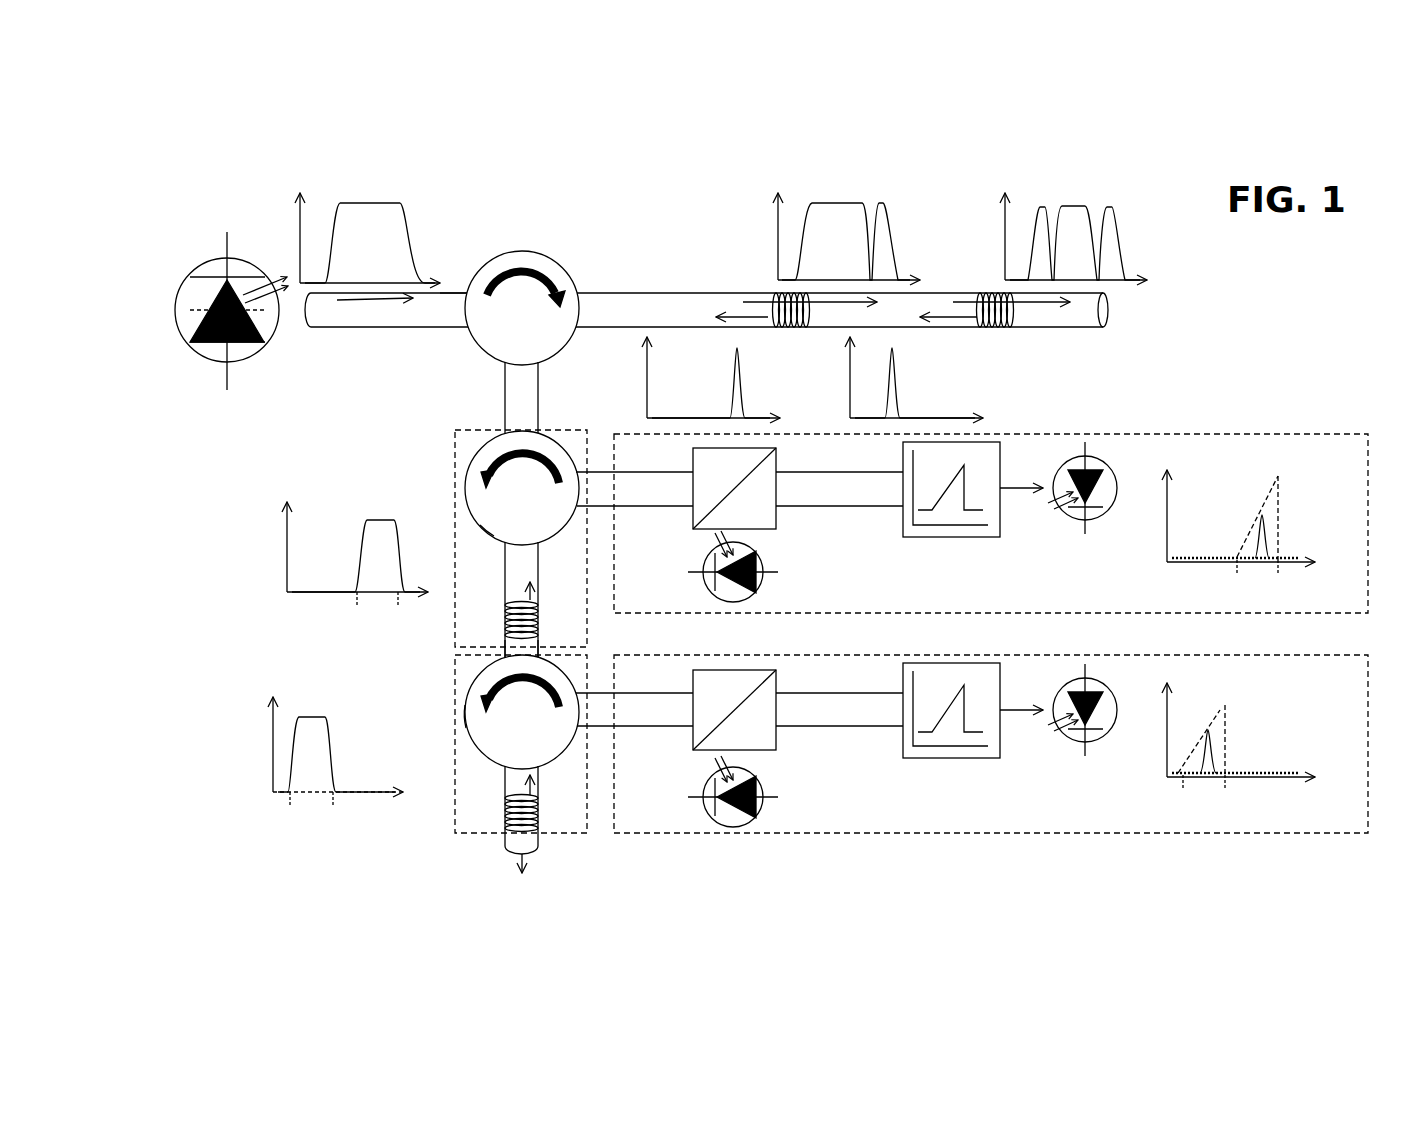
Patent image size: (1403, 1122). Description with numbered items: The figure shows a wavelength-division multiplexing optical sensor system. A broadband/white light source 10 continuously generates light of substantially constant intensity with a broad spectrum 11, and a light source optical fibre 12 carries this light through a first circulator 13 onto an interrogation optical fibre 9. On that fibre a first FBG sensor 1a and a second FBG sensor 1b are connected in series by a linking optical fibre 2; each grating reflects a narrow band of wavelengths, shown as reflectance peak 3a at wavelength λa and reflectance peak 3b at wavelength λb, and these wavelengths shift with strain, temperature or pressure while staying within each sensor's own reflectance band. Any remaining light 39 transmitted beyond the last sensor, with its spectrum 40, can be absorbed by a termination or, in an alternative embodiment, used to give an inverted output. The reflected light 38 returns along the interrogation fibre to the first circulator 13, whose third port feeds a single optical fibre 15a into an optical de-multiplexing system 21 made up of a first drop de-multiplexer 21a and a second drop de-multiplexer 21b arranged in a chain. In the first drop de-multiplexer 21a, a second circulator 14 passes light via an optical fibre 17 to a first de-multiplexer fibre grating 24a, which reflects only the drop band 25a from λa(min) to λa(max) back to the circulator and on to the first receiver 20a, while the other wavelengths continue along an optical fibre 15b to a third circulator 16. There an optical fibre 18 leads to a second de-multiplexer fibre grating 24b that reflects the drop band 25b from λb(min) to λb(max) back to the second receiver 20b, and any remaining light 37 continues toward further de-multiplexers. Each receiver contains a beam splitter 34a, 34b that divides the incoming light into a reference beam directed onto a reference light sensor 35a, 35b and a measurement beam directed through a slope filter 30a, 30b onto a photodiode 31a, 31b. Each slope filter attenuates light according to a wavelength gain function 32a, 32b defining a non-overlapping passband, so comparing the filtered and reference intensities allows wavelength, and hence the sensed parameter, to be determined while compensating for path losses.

The broadband/white light source 10 is at (193, 275).
The broad spectrum 11 is at (416, 238).
The light source optical fibre 12 is at (462, 290).
The first circulator 13 is at (565, 282).
The interrogation optical fibre 9 is at (634, 293).
The reflected light 38 is at (745, 318).
The linking optical fibre 2 is at (948, 293).
The first FBG sensor 1a is at (794, 328).
The second FBG sensor 1b is at (998, 328).
The remaining light 39 is at (1035, 303).
The spectrum 40 is at (1070, 245).
The reflectance peak 3a is at (733, 388).
The reflectance peak 3b is at (895, 378).
The optical fibre 15a is at (538, 367).
The optical de-multiplexing system 21 is at (396, 480).
The first drop de-multiplexer 21a is at (457, 492).
The drop band 25a is at (363, 520).
The second circulator 14 is at (483, 530).
The optical fibre 17 is at (523, 555).
The first de-multiplexer fibre grating 24a is at (535, 607).
The optical fibre 15b is at (537, 641).
The second drop de-multiplexer 21b is at (453, 687).
The drop band 25b is at (312, 716).
The third circulator 16 is at (467, 720).
The optical fibre 18 is at (512, 782).
The second de-multiplexer fibre grating 24b is at (538, 807).
The remaining light 37 is at (528, 872).
The first receiver 20a is at (1182, 433).
The beam splitter 34a is at (776, 530).
The reference light sensor 35a is at (760, 585).
The slope filter 30a is at (972, 537).
The photodiode 31a is at (1072, 522).
The wavelength gain function 32a is at (1257, 527).
The second receiver 20b is at (1185, 641).
The beam splitter 34b is at (776, 750).
The reference light sensor 35b is at (760, 810).
The slope filter 30b is at (972, 758).
The photodiode 31b is at (1072, 745).
The wavelength gain function 32b is at (1197, 750).